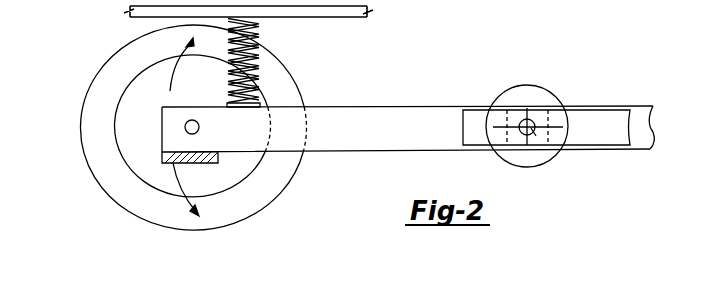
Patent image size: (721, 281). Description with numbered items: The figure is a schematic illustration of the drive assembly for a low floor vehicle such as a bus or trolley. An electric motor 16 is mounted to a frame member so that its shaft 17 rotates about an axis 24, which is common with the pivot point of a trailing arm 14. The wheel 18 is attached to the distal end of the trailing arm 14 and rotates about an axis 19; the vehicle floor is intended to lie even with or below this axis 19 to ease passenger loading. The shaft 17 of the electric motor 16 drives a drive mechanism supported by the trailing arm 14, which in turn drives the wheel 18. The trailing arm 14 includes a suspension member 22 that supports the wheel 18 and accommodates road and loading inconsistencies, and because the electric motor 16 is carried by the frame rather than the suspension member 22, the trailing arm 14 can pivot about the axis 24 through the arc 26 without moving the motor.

The trailing arm 14 is at (346, 132).
The electric motor 16 is at (517, 95).
The shaft 17 is at (536, 122).
The wheel 18 is at (95, 108).
The axis 19 is at (200, 130).
The suspension member 22 is at (258, 58).
The axis 24 is at (533, 130).
The arc 26 is at (173, 77).